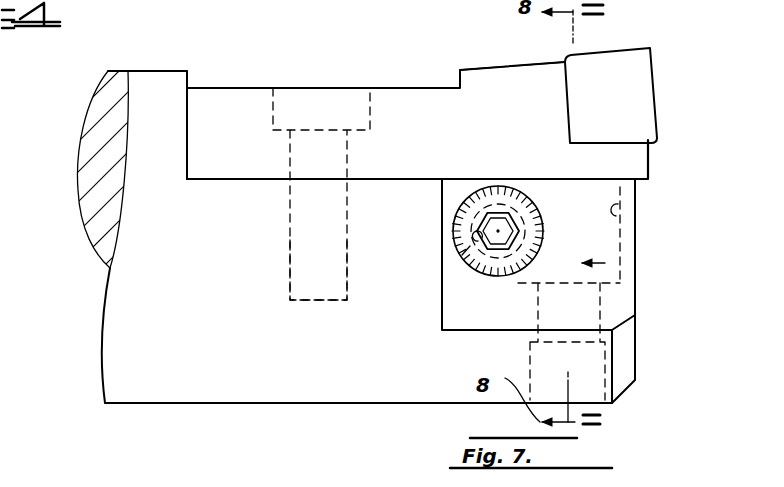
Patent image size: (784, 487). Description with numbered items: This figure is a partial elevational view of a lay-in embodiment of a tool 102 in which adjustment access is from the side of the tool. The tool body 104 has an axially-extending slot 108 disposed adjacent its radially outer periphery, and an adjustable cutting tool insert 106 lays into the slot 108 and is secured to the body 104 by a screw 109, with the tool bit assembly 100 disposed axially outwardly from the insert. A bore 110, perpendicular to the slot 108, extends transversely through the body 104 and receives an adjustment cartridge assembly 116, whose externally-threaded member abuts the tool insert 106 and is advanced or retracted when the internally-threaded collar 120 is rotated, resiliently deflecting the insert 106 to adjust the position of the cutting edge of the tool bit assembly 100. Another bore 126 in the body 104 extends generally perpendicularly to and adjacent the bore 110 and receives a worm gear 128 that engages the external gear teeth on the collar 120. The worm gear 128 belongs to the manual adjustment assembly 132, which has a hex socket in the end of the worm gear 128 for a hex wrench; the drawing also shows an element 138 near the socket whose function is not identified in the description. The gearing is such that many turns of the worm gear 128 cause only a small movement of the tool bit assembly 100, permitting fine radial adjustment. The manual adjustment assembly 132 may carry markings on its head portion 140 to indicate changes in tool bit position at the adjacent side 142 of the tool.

The tool bit assembly 100 is at (622, 85).
The tool 102 is at (137, 291).
The tool body 104 is at (127, 363).
The adjustable cutting tool insert 106 is at (508, 82).
The axially-extending slot 108 is at (192, 103).
The screw 109 is at (310, 103).
The bore 110 is at (622, 212).
The adjustment cartridge assembly 116 is at (622, 258).
The internally-threaded collar 120 is at (530, 268).
The bore 126 is at (458, 234).
The worm gear 128 is at (453, 212).
The manual adjustment assembly 132 is at (456, 258).
The hex socket 138 is at (502, 220).
The head portion 140 is at (483, 187).
The side 142 is at (285, 265).